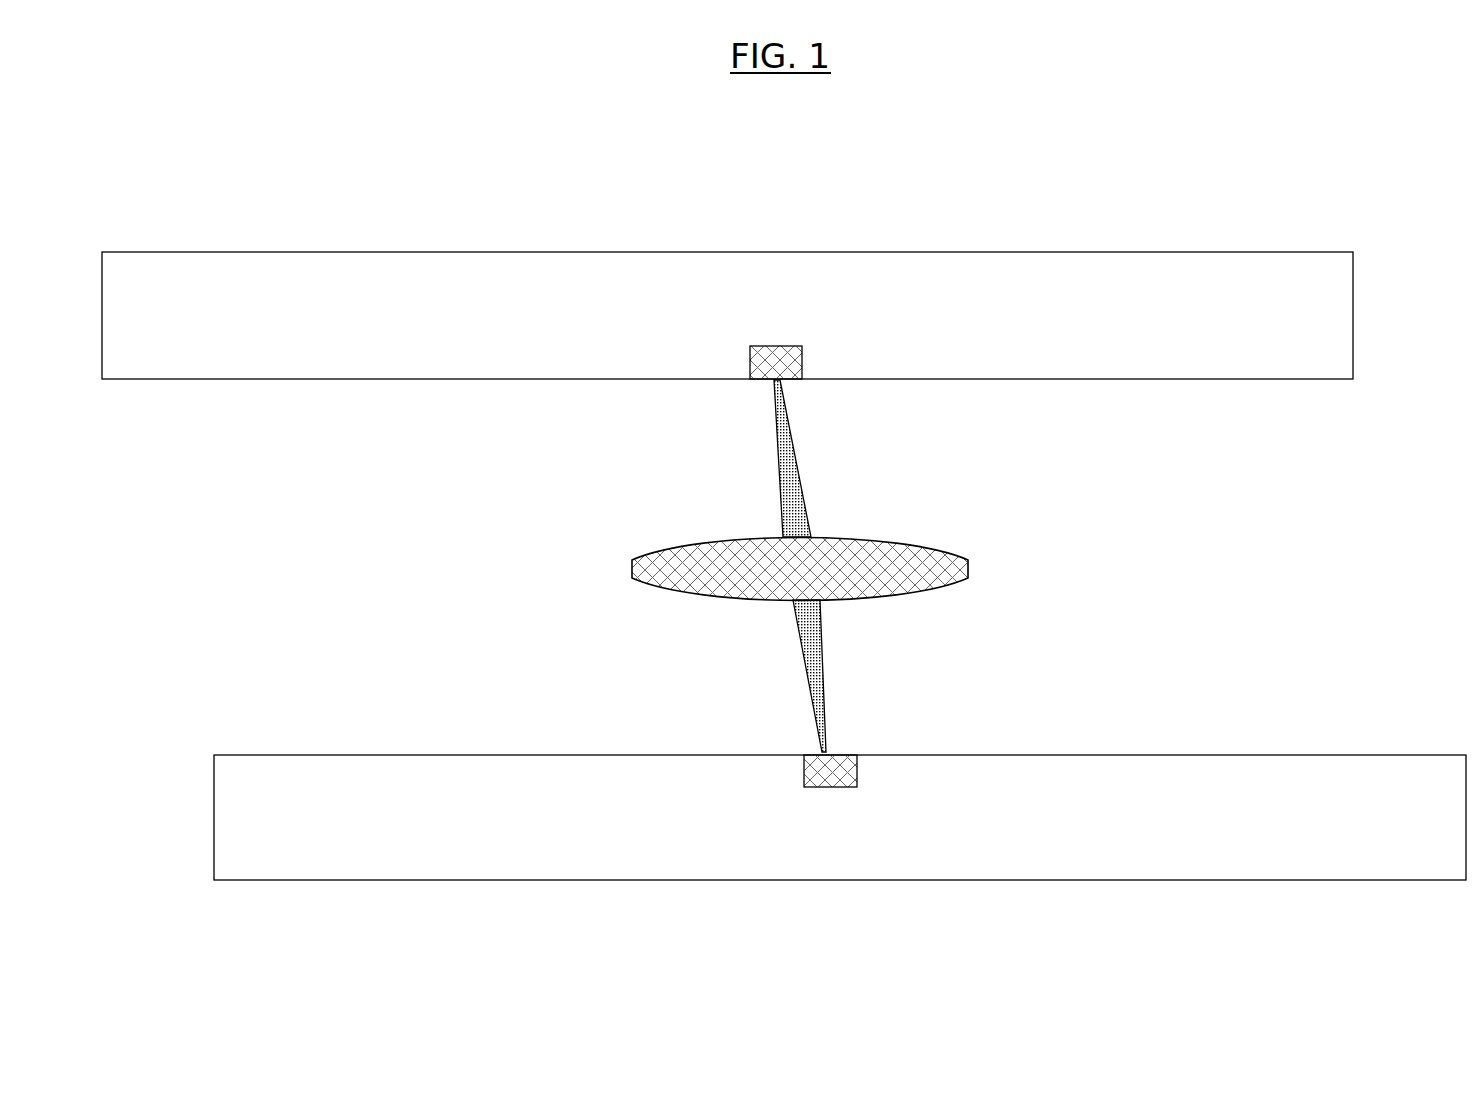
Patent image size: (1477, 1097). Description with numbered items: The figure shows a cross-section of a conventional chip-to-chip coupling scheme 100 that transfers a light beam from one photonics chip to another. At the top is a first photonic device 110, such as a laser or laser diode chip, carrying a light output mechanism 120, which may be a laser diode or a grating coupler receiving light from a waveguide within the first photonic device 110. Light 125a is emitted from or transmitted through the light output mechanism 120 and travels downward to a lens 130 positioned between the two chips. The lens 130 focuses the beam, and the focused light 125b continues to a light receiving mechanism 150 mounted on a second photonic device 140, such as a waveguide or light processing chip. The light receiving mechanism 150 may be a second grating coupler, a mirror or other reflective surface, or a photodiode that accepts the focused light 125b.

The chip-to-chip coupling scheme 100 is at (647, 176).
The first photonic device 110 is at (752, 326).
The light output mechanism 120 is at (782, 383).
The light 125a is at (780, 475).
The focused light 125b is at (806, 665).
The lens 130 is at (630, 565).
The second photonic device 140 is at (864, 846).
The light receiving mechanism 150 is at (840, 751).